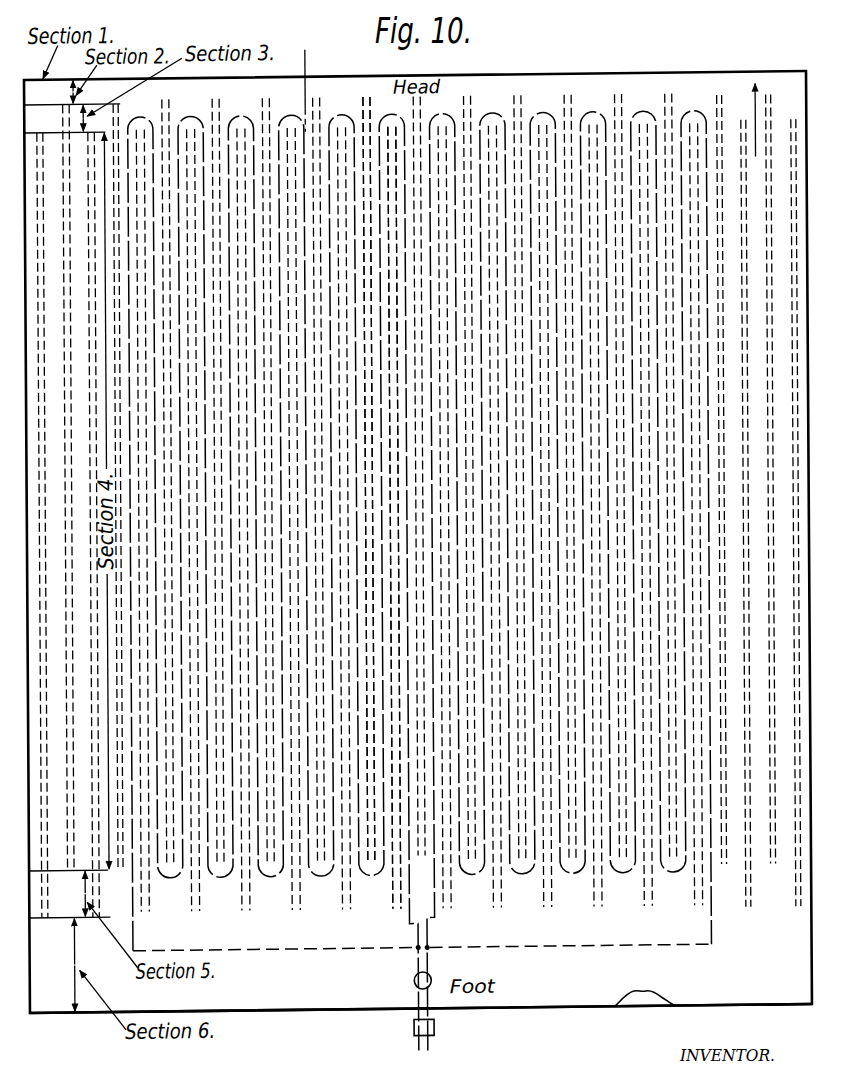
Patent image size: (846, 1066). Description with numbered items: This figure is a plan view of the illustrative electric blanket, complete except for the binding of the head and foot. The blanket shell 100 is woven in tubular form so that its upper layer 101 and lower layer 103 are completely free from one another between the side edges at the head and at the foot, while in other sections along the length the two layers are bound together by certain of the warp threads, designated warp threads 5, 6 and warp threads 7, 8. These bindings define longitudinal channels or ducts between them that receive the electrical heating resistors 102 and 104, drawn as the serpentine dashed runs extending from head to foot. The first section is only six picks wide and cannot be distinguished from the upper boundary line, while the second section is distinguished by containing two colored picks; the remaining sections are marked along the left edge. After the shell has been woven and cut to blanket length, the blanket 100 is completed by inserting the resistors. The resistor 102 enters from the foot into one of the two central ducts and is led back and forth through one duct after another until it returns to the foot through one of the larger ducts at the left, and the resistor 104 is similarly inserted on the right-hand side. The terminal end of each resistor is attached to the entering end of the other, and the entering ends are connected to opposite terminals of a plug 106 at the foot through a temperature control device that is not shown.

The blanket shell 100 is at (554, 79).
The upper layer 101 is at (596, 1008).
The electrical heating resistor 102 is at (141, 118).
The lower layer 103 is at (637, 1007).
The electrical heating resistor 104 is at (694, 118).
The plug 106 is at (407, 1030).
The warp thread 5 is at (368, 126).
The warp thread 6 is at (368, 126).
The warp thread 7 is at (402, 132).
The warp thread 8 is at (402, 132).